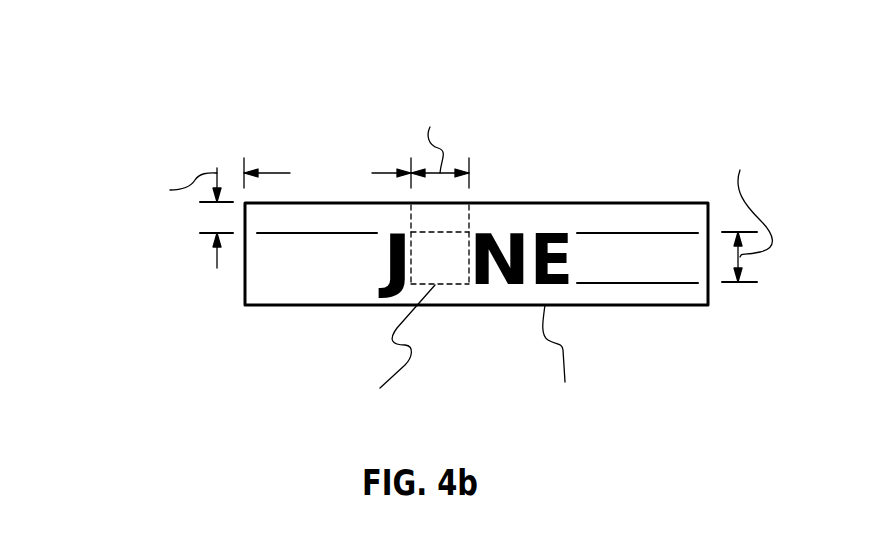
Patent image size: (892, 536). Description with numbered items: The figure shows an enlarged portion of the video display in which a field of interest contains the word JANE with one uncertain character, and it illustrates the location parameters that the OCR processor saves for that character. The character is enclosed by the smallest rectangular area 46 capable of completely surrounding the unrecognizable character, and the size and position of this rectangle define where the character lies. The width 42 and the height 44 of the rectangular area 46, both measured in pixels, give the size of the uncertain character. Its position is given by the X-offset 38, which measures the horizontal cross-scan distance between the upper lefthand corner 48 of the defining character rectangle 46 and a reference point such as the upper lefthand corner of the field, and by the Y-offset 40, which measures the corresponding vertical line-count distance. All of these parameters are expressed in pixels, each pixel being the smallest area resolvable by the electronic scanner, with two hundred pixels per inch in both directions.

The X offset 38 is at (335, 145).
The Y offset 40 is at (125, 162).
The width 42 is at (443, 92).
The height 44 is at (740, 132).
The rectangular area 46 is at (437, 285).
The upper lefthand corner 48 is at (411, 232).